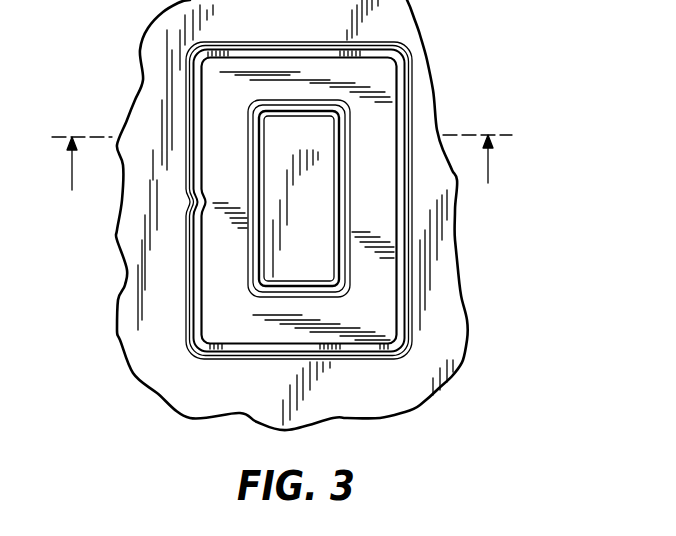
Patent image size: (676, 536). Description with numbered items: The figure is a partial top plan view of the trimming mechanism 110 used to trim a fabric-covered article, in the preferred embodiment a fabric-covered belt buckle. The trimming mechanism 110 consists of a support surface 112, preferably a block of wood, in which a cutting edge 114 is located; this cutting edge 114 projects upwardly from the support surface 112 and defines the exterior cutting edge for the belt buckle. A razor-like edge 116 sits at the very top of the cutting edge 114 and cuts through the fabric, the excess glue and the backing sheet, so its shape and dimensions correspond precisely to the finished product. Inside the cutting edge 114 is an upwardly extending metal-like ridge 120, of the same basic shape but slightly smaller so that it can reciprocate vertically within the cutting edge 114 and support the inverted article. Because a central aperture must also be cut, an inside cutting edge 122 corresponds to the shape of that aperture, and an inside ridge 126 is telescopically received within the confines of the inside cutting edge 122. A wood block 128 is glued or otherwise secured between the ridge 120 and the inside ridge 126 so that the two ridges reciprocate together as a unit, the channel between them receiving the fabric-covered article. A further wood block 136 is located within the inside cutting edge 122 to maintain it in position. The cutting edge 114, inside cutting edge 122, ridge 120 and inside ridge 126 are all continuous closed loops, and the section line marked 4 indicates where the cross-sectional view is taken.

The trimming mechanism 110 is at (449, 66).
The support surface 112 is at (420, 390).
The cutting edge 114 is at (407, 245).
The razor-like edge 116 is at (415, 278).
The ridge 120 is at (197, 273).
The inside cutting edge 122 is at (337, 280).
The inside ridge 126 is at (342, 113).
The wood block 128 is at (218, 100).
The wood block 136 is at (323, 258).
The section line 4- 4 is at (282, 181).